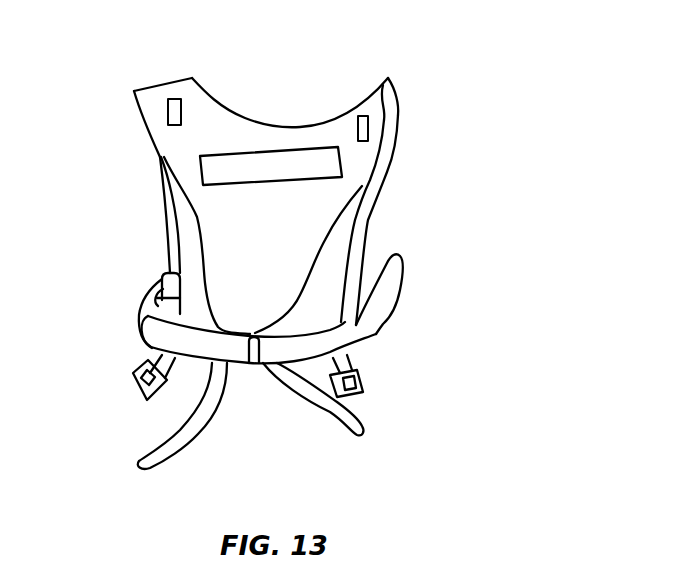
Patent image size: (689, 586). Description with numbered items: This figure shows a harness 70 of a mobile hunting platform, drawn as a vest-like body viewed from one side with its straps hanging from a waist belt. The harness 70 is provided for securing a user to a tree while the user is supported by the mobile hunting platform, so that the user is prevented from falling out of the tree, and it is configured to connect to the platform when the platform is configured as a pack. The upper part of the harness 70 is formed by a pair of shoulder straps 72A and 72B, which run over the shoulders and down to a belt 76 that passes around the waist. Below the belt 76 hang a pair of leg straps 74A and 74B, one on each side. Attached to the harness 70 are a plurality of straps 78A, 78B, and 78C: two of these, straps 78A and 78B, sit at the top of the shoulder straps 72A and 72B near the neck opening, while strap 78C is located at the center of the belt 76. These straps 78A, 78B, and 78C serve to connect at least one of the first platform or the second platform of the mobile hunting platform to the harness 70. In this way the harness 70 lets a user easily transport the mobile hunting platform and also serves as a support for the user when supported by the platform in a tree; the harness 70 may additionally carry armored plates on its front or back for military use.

The harness 70 is at (528, 167).
The shoulder strap 72A is at (170, 220).
The shoulder strap 72B is at (369, 204).
The leg strap 74A is at (153, 452).
The leg strap 74B is at (362, 427).
The belt 76 is at (380, 326).
The strap 78A is at (175, 99).
The strap 78B is at (362, 116).
The strap 78C is at (254, 363).